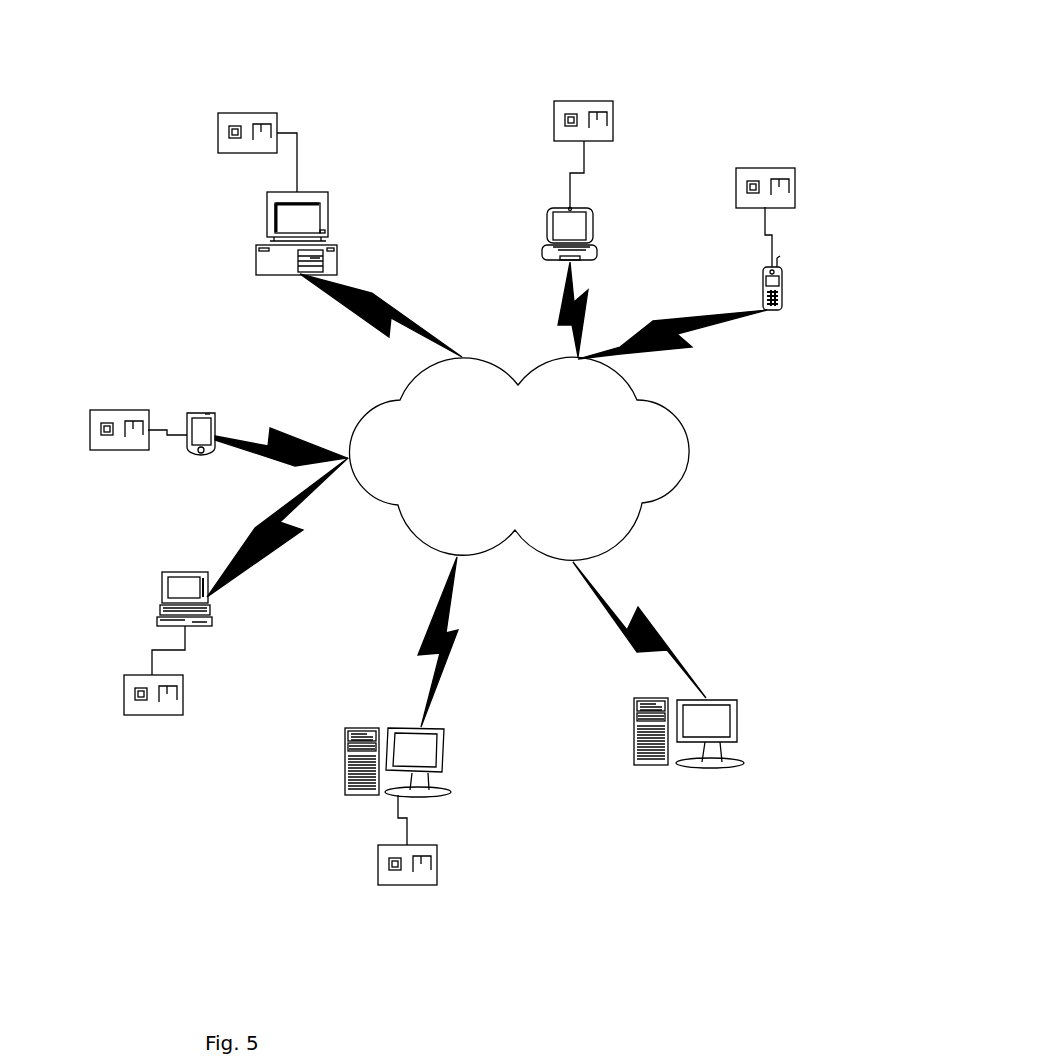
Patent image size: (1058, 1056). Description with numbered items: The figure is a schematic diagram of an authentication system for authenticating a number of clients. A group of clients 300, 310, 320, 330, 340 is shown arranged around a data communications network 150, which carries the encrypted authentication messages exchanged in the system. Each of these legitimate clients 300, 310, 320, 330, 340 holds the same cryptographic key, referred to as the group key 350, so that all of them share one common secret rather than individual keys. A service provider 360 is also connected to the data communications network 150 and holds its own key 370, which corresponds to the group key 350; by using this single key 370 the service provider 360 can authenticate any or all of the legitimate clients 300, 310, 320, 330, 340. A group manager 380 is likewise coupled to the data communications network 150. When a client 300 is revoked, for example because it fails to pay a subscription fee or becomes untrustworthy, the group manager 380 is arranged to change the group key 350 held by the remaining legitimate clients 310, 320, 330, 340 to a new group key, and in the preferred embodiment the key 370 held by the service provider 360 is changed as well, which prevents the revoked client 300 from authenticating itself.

The data communications network 150 is at (598, 490).
The client 300 is at (210, 615).
The client 310 is at (200, 432).
The client 320 is at (307, 228).
The client 330 is at (566, 228).
The client 340 is at (782, 283).
The group key 350 is at (255, 137).
The service provider 360 is at (415, 750).
The key 370 is at (410, 868).
The group manager 380 is at (702, 727).